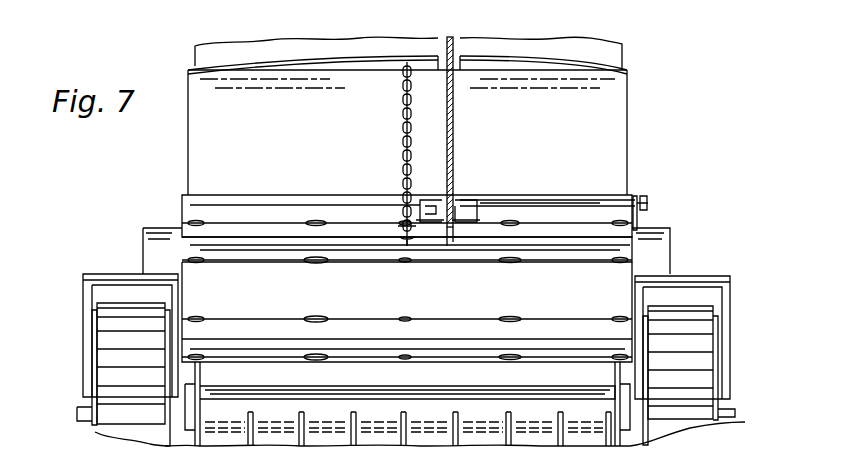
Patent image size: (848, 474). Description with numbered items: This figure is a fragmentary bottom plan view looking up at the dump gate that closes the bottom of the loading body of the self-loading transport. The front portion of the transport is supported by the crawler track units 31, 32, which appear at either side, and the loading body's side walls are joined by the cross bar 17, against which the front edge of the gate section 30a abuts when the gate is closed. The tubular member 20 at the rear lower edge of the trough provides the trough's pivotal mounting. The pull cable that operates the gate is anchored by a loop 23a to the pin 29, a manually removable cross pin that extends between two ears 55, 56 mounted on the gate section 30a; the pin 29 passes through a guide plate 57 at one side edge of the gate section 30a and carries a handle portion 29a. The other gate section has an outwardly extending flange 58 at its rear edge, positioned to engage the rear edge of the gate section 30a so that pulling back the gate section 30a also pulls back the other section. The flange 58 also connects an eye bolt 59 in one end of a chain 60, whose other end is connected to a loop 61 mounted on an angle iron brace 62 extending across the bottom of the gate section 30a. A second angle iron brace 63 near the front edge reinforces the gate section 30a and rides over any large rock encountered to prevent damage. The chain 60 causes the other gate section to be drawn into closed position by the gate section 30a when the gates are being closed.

The cross bar 17 is at (407, 404).
The tubular member 20 is at (342, 426).
The loop 23a is at (452, 244).
The pin 29 is at (546, 200).
The handle portion 29a is at (648, 203).
The gate section 30a is at (318, 197).
The crawler track unit 31 is at (712, 292).
The crawler track unit 32 is at (97, 288).
The ear 55 is at (433, 200).
The ear 56 is at (459, 200).
The guide plate 57 is at (634, 196).
The flange 58 is at (496, 58).
The eye bolt 59 is at (407, 62).
The chain 60 is at (403, 132).
The loop 61 is at (402, 238).
The angle iron brace 62 is at (258, 256).
The angle iron brace 63 is at (292, 322).